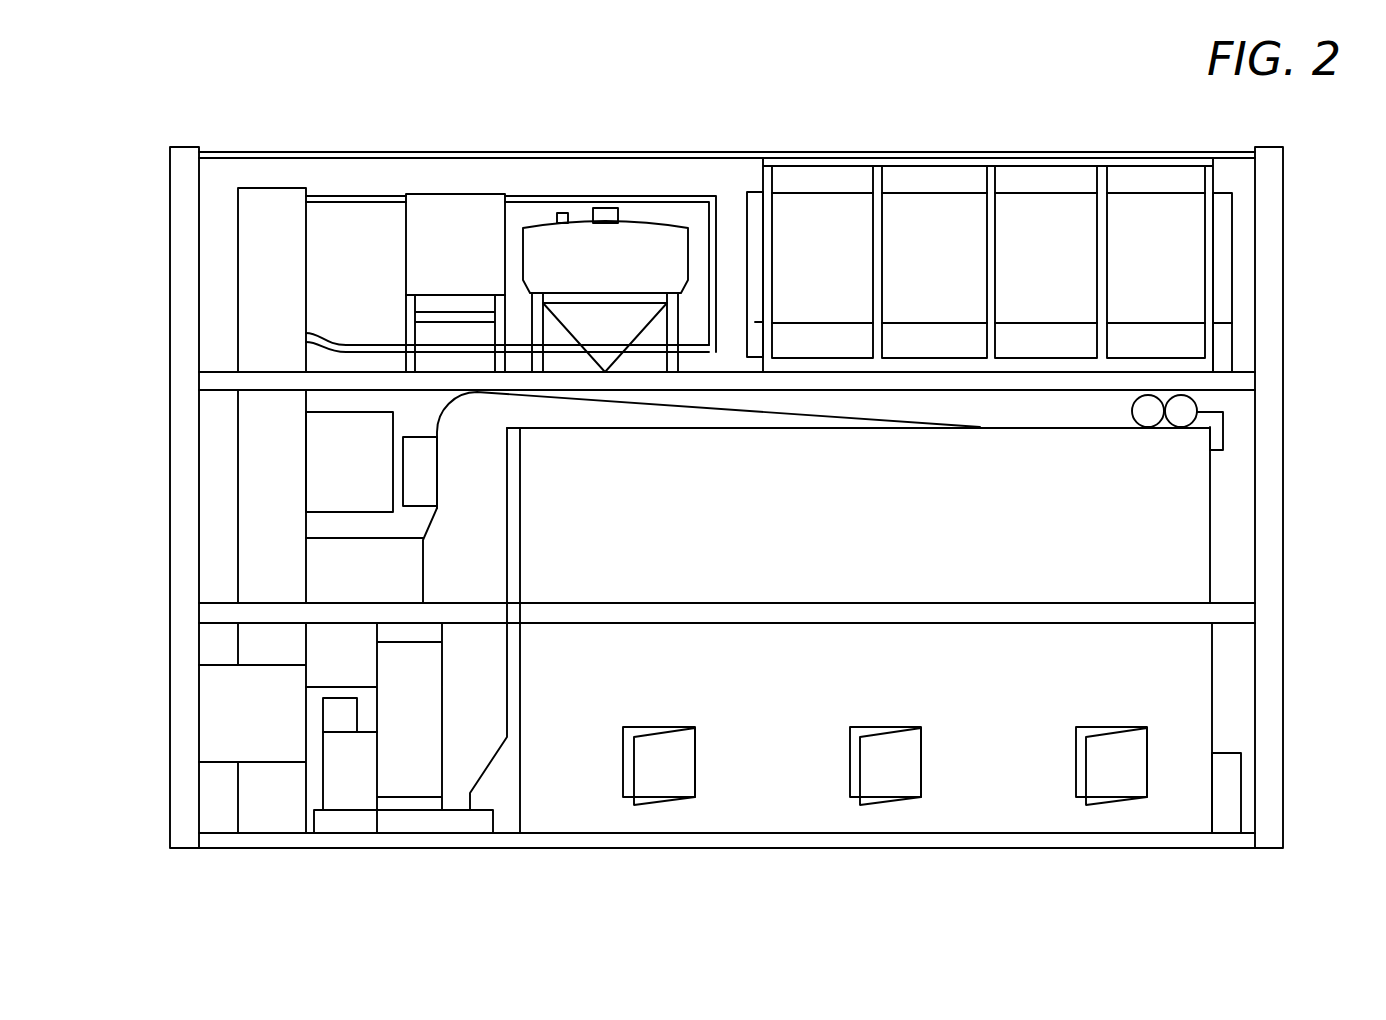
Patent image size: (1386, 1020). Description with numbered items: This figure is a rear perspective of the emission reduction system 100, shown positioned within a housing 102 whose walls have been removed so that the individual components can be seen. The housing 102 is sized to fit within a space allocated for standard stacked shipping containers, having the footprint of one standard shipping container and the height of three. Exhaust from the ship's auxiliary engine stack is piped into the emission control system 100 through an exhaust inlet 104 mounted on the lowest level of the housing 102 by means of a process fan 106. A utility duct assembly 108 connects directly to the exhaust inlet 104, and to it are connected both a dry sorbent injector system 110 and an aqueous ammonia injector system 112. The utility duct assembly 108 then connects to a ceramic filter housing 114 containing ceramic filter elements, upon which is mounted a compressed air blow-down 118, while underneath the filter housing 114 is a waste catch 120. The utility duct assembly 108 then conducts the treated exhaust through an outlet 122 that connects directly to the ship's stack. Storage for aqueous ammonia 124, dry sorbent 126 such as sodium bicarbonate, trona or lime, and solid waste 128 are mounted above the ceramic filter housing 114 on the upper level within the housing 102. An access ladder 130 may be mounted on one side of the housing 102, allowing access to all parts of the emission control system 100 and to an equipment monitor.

The emission reduction system 100 is at (104, 144).
The housing 102 is at (183, 300).
The exhaust inlet 104 is at (338, 667).
The process fan 106 is at (407, 743).
The utility duct assembly 108 is at (472, 583).
The dry sorbent injector system 110 is at (417, 483).
The aqueous ammonia injector system 112 is at (370, 460).
The ceramic filter housing 114 is at (1190, 518).
The compressed air blow-down 118 is at (1217, 418).
The waste catch 120 is at (665, 787).
The outlet 122 is at (345, 572).
The storage for aqueous ammonia 124 is at (1137, 222).
The dry sorbent storage 126 is at (438, 218).
The solid waste storage 128 is at (650, 237).
The access ladder 130 is at (263, 538).